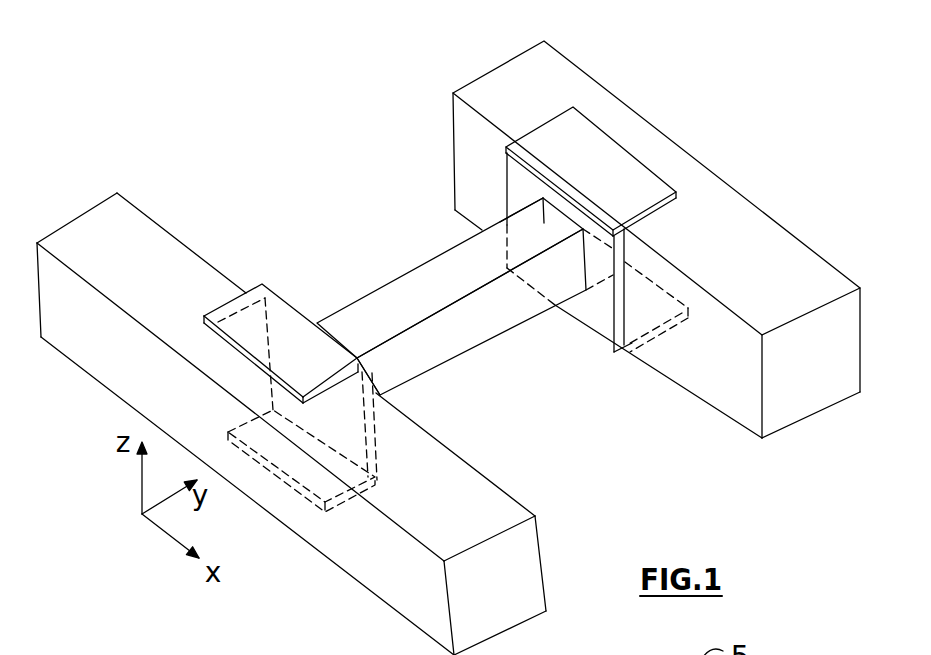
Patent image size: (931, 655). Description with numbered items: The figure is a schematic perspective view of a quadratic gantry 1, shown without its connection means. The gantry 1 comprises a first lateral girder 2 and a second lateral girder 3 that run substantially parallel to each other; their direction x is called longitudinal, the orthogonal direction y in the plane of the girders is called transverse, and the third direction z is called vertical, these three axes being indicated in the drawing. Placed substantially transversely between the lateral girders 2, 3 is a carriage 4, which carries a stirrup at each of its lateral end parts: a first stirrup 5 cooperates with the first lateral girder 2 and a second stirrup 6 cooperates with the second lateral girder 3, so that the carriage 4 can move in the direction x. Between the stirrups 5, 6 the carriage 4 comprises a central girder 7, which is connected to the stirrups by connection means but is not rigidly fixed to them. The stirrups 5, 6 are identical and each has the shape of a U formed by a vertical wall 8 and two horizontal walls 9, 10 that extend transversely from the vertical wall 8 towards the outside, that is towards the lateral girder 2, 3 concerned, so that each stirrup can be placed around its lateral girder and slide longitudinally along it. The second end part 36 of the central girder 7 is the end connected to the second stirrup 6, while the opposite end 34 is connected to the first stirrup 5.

The gantry 1 is at (656, 236).
The first lateral girder 2 is at (773, 268).
The second lateral girder 3 is at (405, 574).
The carriage 4 is at (465, 300).
The first stirrup 5 is at (597, 232).
The second stirrup 6 is at (290, 335).
The central girder 7 is at (470, 325).
The vertical wall 8 is at (600, 310).
The horizontal wall 9 is at (307, 345).
The horizontal wall 10 is at (633, 353).
The first end of cross member 34 is at (540, 220).
The second end part 36 is at (390, 367).